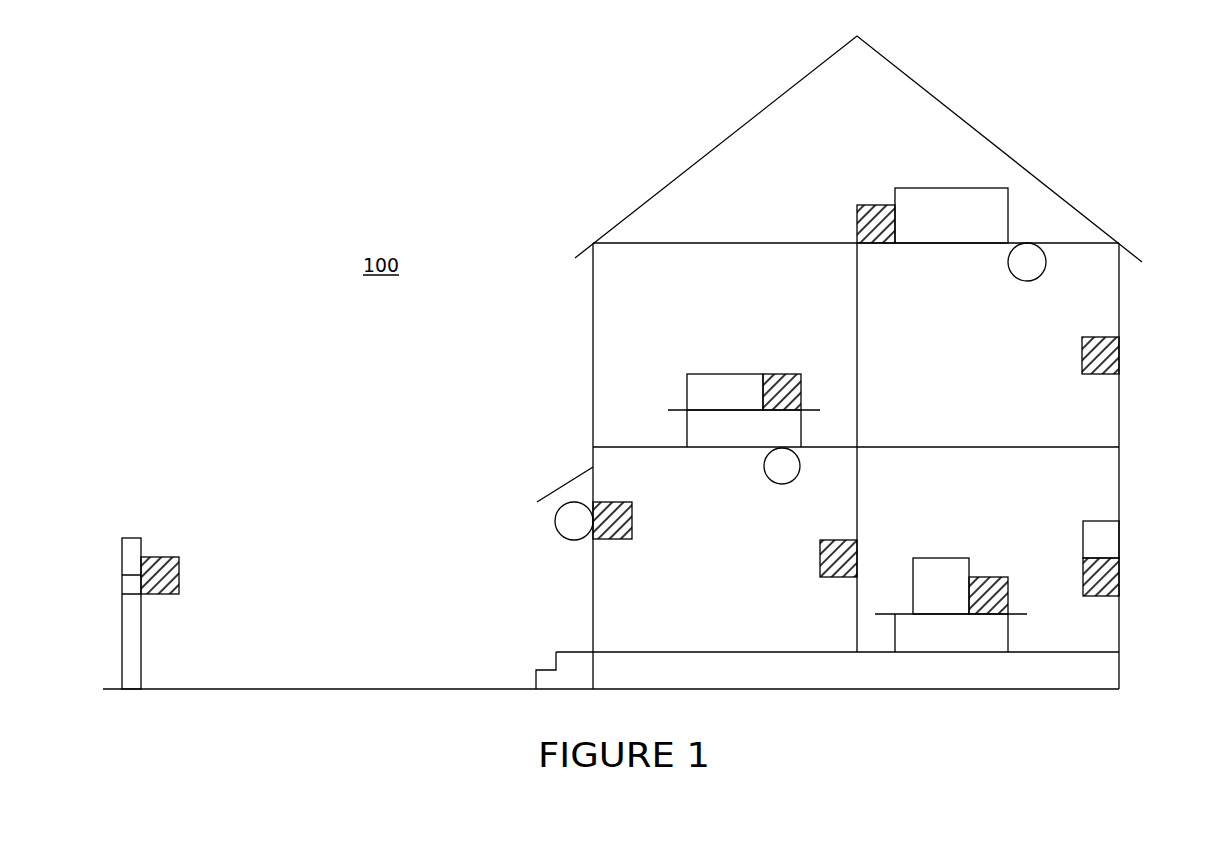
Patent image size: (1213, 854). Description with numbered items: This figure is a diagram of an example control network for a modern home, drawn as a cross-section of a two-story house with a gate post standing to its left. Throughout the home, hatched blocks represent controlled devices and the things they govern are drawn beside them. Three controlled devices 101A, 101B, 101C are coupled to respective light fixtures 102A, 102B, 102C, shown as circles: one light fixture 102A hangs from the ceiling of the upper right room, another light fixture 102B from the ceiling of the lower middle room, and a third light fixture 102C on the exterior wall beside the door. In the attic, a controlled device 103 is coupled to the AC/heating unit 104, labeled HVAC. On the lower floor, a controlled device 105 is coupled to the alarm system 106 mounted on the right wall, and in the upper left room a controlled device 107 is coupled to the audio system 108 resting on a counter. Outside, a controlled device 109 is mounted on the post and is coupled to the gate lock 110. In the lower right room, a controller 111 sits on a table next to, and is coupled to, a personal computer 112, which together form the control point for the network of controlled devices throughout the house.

The controlled device 101A is at (1119, 355).
The controlled device 101B is at (818, 577).
The controlled device 101C is at (632, 539).
The light fixture 102A is at (1022, 280).
The light fixture 102B is at (778, 485).
The light fixture 102C is at (553, 520).
The controlled device 103 is at (857, 206).
The AC/heating unit 104 is at (913, 188).
The controlled device 105 is at (1120, 578).
The alarm system 106 is at (1083, 521).
The controlled device 107 is at (782, 372).
The audio system 108 is at (707, 372).
The controlled device 109 is at (157, 557).
The gate lock 110 is at (123, 575).
The controller 111 is at (987, 577).
The personal computer 112 is at (933, 558).